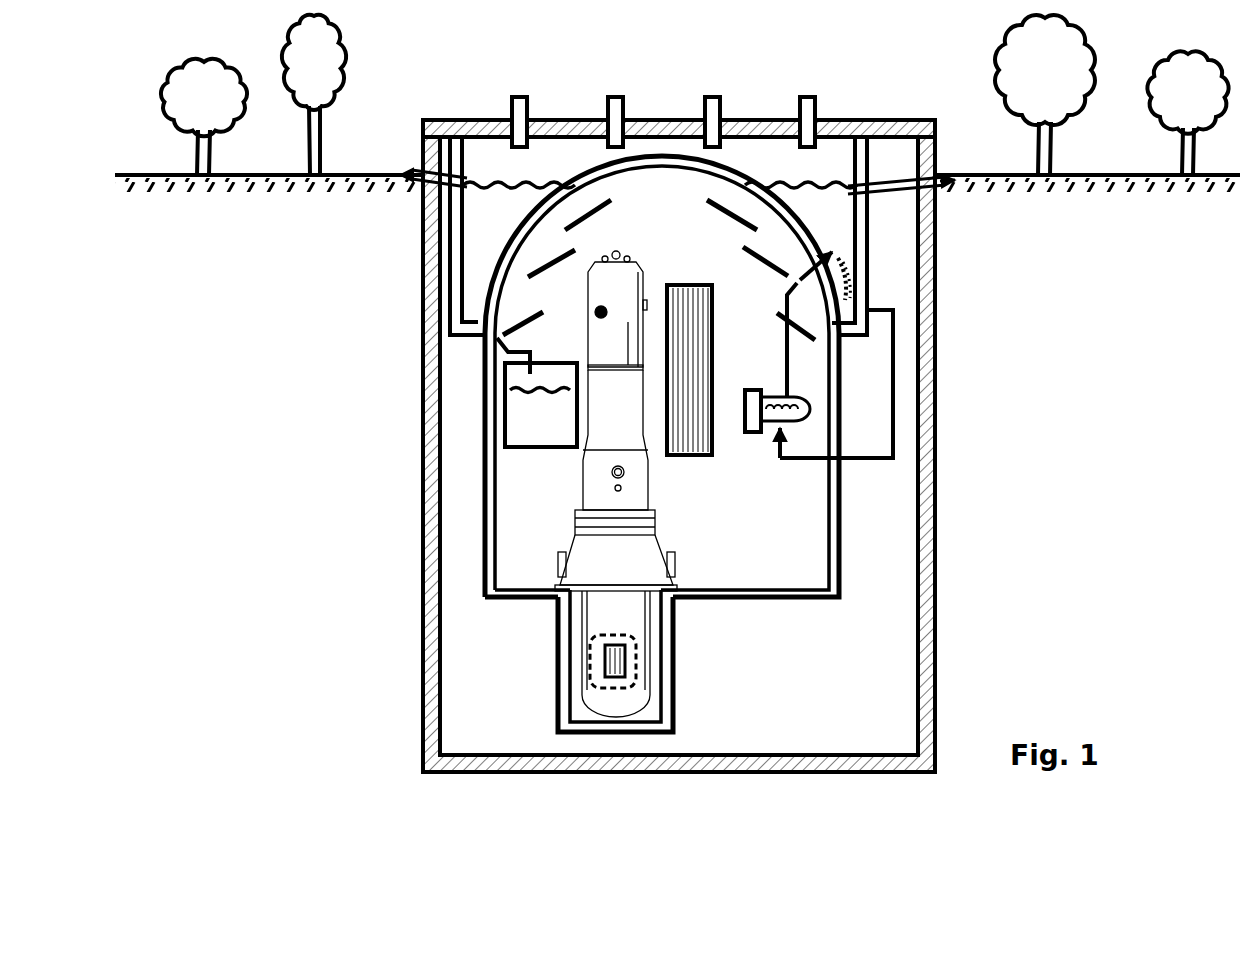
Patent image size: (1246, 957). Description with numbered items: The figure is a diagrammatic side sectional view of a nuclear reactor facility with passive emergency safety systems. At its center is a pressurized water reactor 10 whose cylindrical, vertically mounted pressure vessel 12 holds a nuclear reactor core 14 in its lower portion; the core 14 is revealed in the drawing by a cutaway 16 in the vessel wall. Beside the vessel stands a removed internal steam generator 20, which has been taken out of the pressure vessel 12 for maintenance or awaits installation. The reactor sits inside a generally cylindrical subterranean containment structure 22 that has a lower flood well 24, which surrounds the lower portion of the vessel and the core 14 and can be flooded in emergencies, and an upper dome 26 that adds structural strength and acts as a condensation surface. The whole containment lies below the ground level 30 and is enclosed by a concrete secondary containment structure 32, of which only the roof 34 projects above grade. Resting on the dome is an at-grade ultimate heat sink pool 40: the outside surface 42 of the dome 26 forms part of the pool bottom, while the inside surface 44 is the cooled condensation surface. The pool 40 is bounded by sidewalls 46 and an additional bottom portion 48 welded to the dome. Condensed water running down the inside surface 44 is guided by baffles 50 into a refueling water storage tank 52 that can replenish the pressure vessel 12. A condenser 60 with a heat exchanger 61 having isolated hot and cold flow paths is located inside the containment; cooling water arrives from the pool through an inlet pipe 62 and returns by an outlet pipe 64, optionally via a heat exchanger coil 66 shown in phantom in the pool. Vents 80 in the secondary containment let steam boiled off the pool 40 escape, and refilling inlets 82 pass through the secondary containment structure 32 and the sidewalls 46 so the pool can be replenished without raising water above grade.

The pressurized water reactor 10 is at (610, 484).
The pressure vessel 12 is at (643, 483).
The nuclear reactor core 14 is at (610, 660).
The cutaway 16 is at (592, 678).
The removed internal steam generator 20 is at (713, 360).
The containment structure 22 is at (838, 535).
The lower flood well 24 is at (690, 670).
The upper dome 26 is at (503, 255).
The ground level 30 is at (1078, 177).
The secondary containment structure 32 is at (935, 440).
The roof 34 is at (850, 103).
The ultimate heat sink pool 40 is at (658, 236).
The outside surface 42 is at (540, 224).
The inside surface 44 is at (574, 208).
The sidewalls 46 is at (866, 246).
The additional bottom portion 48 is at (850, 338).
The baffles 50 is at (583, 228).
The refueling water storage tank 52 is at (537, 392).
The condenser 60 is at (772, 424).
The heat exchanger 61 is at (792, 432).
The inlet pipe 62 is at (867, 457).
The outlet pipe 64 is at (786, 350).
The heat exchanger coil 66 is at (846, 283).
The vents 80 is at (805, 97).
The refilling inlets 82 is at (420, 168).